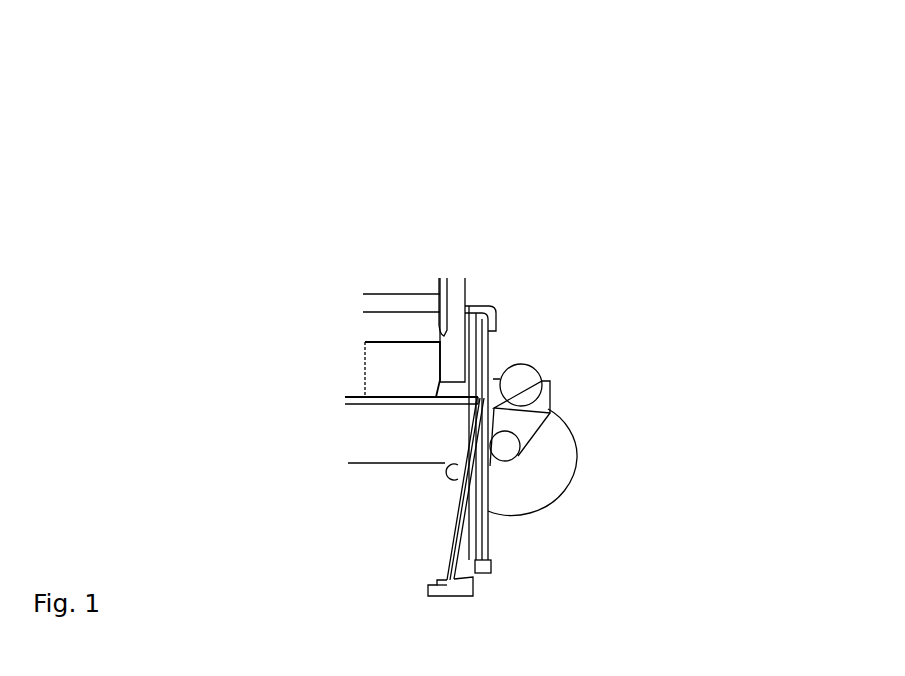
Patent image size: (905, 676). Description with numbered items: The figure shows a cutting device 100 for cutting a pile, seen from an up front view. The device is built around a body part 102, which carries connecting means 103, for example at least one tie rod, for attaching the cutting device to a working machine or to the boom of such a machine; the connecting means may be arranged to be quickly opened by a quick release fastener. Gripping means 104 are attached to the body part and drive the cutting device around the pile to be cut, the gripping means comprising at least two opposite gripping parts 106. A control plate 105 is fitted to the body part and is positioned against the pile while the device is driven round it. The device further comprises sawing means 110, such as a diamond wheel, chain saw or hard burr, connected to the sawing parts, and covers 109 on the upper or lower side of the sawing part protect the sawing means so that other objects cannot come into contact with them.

The cutting device 100 is at (731, 100).
The body part 102 is at (368, 328).
The connecting means 103 is at (405, 305).
The gripping means 104 is at (471, 553).
The control plate 105 is at (402, 433).
The gripping parts 106 is at (455, 562).
The covers 109 is at (547, 483).
The sawing means 110 is at (453, 472).